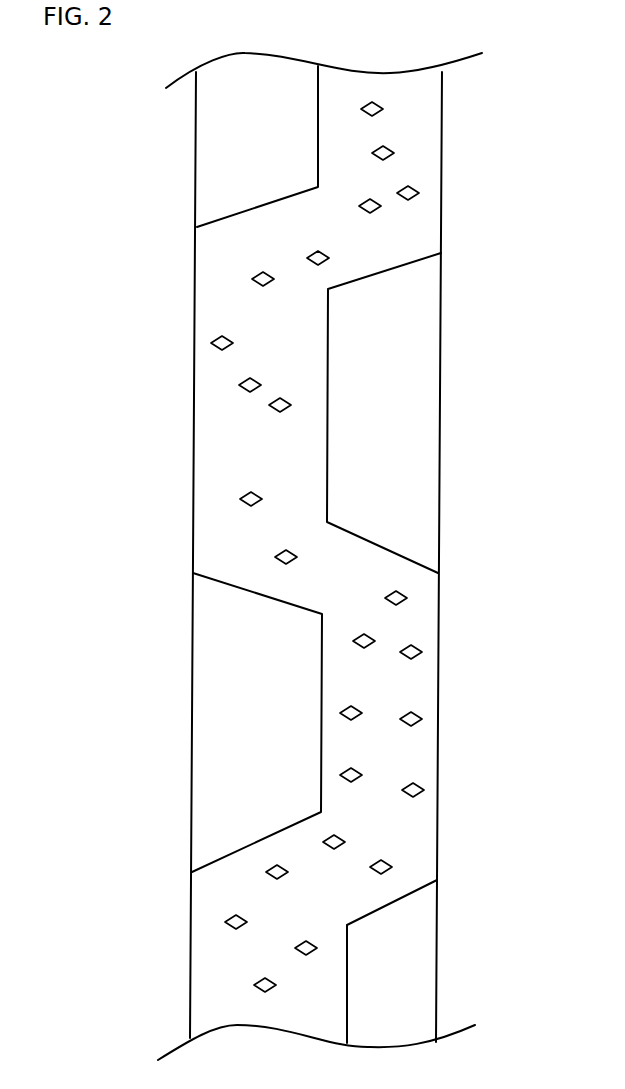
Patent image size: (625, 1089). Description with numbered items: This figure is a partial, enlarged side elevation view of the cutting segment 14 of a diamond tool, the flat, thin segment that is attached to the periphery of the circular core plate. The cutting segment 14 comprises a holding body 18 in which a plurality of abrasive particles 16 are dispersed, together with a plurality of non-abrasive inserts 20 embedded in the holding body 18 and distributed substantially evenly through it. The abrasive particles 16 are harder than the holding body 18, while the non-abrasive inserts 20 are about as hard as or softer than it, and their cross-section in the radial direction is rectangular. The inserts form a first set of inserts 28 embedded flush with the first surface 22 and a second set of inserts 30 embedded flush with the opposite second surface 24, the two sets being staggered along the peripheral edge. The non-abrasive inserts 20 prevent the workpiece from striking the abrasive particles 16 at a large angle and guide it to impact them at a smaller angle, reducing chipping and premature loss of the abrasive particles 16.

The cutting segment 14 is at (496, 233).
The abrasive particles 16 is at (422, 652).
The holding body 18 is at (424, 152).
The non-abrasive inserts 20 is at (228, 148).
The first surface 22 is at (193, 493).
The second surface 24 is at (440, 477).
The first set of inserts 28 is at (192, 750).
The second set of inserts 30 is at (437, 920).